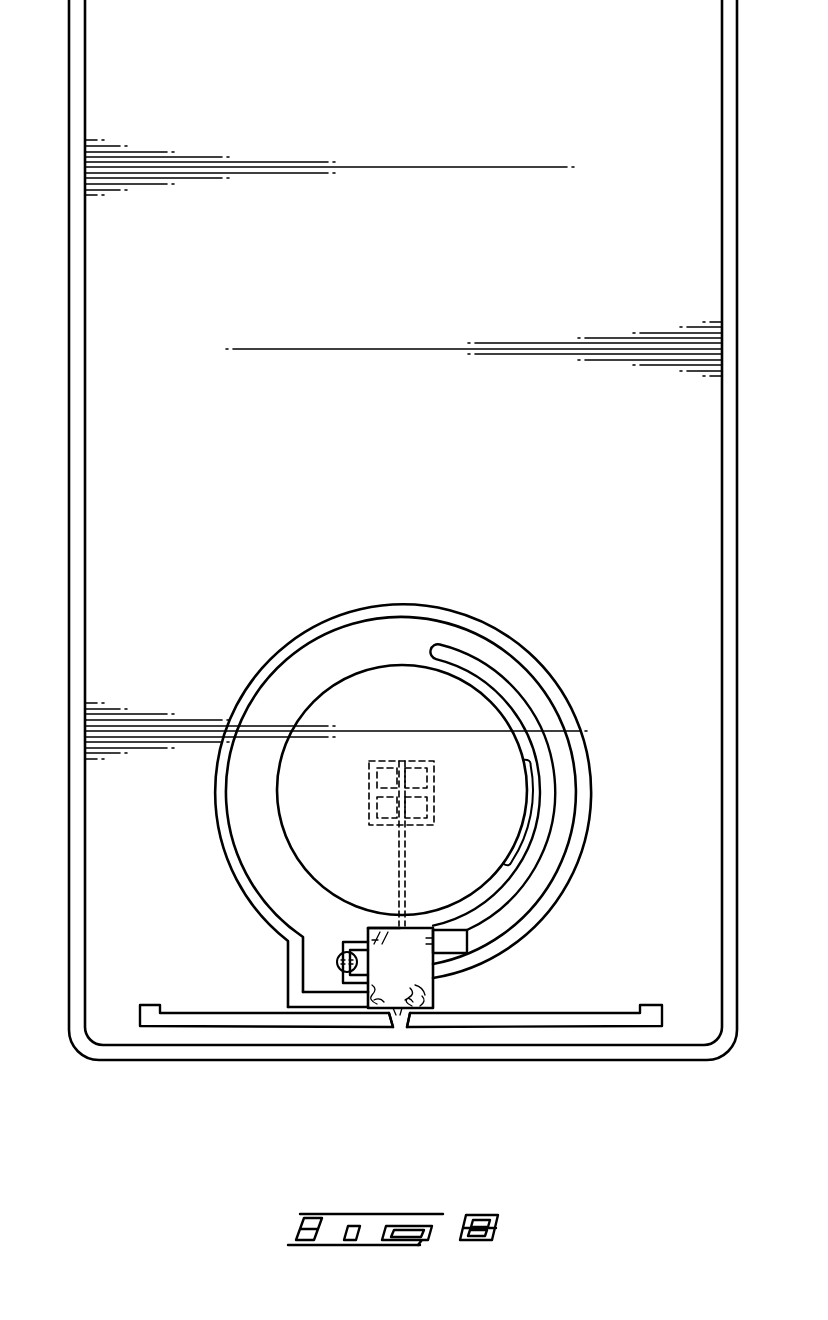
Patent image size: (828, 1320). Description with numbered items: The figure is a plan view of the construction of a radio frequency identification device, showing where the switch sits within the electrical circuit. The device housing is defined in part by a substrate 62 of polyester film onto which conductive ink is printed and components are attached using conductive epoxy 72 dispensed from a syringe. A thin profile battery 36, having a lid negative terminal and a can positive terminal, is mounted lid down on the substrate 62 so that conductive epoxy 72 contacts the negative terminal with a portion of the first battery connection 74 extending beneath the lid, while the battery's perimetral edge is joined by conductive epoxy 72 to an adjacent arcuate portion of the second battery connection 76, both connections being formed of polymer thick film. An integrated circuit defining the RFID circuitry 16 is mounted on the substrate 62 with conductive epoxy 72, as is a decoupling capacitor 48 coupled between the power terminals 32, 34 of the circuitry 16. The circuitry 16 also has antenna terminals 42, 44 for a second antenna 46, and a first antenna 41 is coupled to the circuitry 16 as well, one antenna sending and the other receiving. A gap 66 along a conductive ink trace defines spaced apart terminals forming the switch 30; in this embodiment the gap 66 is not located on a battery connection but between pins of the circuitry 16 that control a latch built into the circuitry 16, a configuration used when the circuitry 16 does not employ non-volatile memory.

The substrate 62 is at (424, 281).
The first antenna 41 is at (522, 657).
The battery 36 is at (385, 700).
The second battery connection 76 is at (470, 663).
The conductive epoxy 72 is at (537, 812).
The first battery connection 74 is at (395, 893).
The circuitry 16 is at (410, 966).
The decoupling capacitor 48 is at (453, 930).
The power terminal 34 is at (366, 930).
The gap 66 is at (338, 961).
The switch 30 is at (340, 968).
The power terminal 32 is at (432, 1012).
The second antenna 46 is at (152, 1018).
The antenna terminal 42 is at (397, 1022).
The antenna terminal 44 is at (405, 1028).